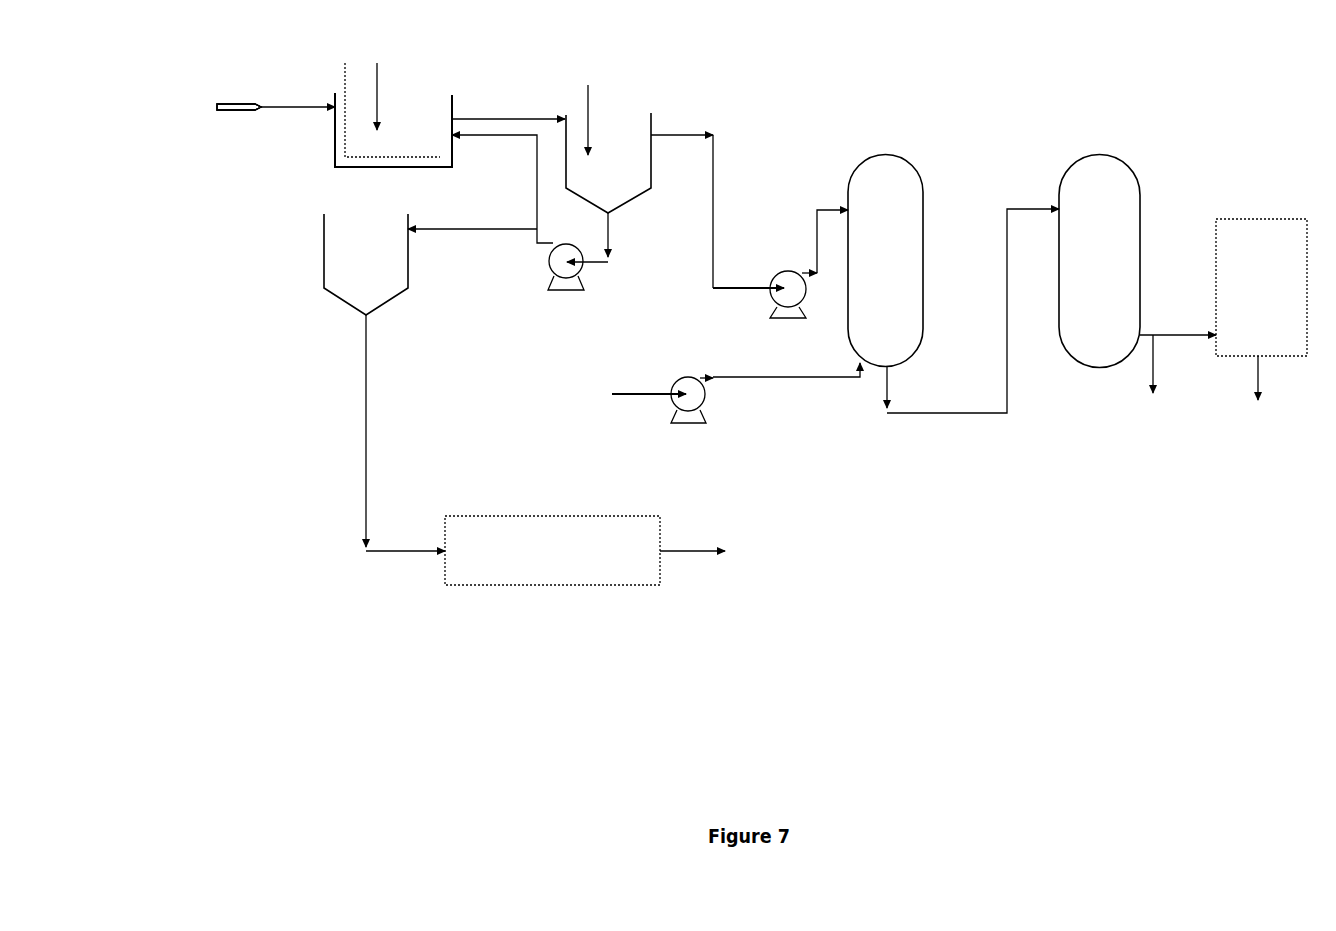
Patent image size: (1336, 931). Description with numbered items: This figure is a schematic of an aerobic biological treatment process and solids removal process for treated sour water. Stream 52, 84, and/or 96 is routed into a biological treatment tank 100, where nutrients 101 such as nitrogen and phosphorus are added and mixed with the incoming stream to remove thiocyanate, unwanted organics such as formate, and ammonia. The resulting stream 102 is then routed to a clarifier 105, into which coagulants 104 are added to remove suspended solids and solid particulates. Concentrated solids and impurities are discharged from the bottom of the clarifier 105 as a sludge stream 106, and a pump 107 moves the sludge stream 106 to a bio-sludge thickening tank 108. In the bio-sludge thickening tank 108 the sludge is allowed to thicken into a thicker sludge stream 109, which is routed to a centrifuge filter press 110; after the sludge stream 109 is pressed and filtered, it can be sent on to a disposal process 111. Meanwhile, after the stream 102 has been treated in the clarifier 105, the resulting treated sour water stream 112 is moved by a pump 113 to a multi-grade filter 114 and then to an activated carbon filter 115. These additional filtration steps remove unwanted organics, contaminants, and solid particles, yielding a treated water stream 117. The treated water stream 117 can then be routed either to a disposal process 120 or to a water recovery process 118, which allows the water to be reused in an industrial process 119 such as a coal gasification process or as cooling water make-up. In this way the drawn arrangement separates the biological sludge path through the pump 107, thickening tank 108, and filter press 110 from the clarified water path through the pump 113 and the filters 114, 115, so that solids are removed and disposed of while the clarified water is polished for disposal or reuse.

The stream 52 is at (246, 92).
The stream 84 is at (239, 107).
The stream 96 is at (239, 107).
The biological treatment tank 100 is at (388, 113).
The nutrients 101 is at (390, 77).
The stream 102 is at (508, 97).
The coagulants 104 is at (600, 98).
The clarifier 105 is at (606, 154).
The sludge stream 106 is at (613, 237).
The pump 107 is at (562, 318).
The bio-sludge thickening tank 108 is at (354, 246).
The thicker sludge stream 109 is at (405, 433).
The centrifuge filter press 110 is at (549, 558).
The disposal process 111 is at (746, 558).
The treated sour water stream 112 is at (717, 195).
The pump 113 is at (782, 351).
The multi-grade filter 114 is at (876, 268).
The activated carbon filter 115 is at (1091, 278).
The treated water stream 117 is at (1178, 315).
The water recovery process 118 is at (1256, 299).
The industrial process 119 is at (1268, 399).
The disposal process 120 is at (1165, 389).